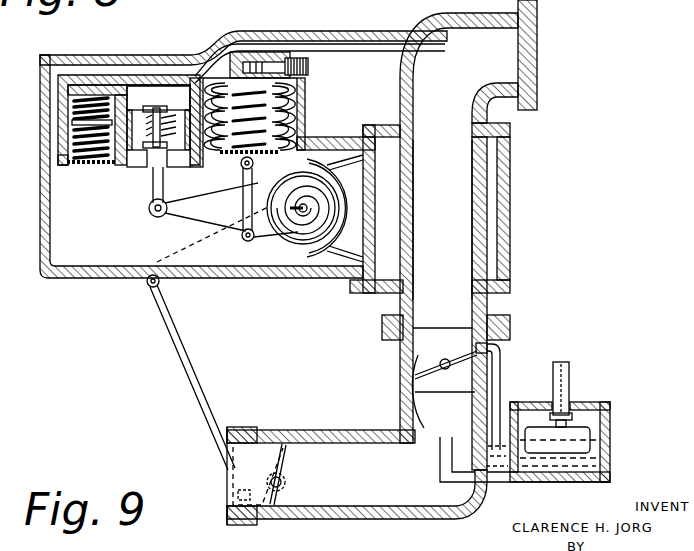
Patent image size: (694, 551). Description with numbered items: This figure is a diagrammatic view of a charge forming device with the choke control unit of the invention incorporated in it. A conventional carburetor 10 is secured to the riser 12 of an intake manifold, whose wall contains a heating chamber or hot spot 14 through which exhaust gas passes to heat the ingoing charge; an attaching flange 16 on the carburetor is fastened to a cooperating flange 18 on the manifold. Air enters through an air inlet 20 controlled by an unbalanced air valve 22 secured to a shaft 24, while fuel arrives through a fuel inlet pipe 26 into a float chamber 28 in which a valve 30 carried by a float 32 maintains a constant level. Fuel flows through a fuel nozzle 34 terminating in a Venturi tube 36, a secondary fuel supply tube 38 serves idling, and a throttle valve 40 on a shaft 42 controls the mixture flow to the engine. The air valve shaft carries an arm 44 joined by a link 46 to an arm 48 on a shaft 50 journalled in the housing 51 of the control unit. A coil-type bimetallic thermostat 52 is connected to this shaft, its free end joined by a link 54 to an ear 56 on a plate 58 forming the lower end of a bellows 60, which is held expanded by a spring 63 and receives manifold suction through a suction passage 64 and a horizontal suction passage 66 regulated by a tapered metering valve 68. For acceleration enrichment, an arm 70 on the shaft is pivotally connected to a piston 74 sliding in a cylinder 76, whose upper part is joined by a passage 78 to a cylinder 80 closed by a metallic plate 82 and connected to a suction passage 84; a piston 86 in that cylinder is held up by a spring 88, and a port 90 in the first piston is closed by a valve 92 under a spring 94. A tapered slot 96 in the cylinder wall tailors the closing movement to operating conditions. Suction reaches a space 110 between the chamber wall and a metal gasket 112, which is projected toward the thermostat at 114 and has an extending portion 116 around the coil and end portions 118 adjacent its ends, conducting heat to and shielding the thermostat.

The carburetor 10 is at (505, 202).
The riser 12 is at (482, 302).
The heating chamber 14 is at (493, 163).
The attaching flange 16 is at (503, 333).
The cooperating flange 18 is at (507, 317).
The air inlet 20 is at (365, 493).
The air valve 22 is at (287, 468).
The shaft 24 is at (287, 485).
The fuel inlet pipe 26 is at (562, 378).
The float chamber 28 is at (598, 418).
The valve 30 is at (568, 400).
The float 32 is at (585, 434).
The fuel nozzle 34 is at (440, 452).
The Venturi tube 36 is at (427, 423).
The secondary fuel supply tube 38 is at (495, 372).
The throttle valve 40 is at (427, 372).
The shaft 42 is at (447, 371).
The arm 44 is at (258, 480).
The link 46 is at (202, 398).
The arm 48 is at (162, 283).
The shaft 50 is at (305, 218).
The housing 51 is at (85, 277).
The bimetallic thermostat 52 is at (260, 243).
The link 54 is at (246, 224).
The ear 56 is at (242, 163).
The plate 58 is at (255, 164).
The bellows 60 is at (270, 128).
The spring 63 is at (270, 100).
The suction passage 64 is at (262, 62).
The horizontal suction passage 66 is at (280, 50).
The tapered metering valve 68 is at (309, 70).
The arm 70 is at (183, 207).
The piston 74 is at (178, 166).
The cylinder 76 is at (156, 88).
The passage 78 is at (127, 95).
The cylinder 80 is at (80, 85).
The metallic plate 82 is at (95, 170).
The suction passage 84 is at (47, 158).
The piston 86 is at (77, 112).
The spring 88 is at (78, 137).
The port 90 is at (163, 128).
The valve 92 is at (162, 110).
The spring 94 is at (150, 167).
The tapered slot 96 is at (197, 80).
The space 110 is at (380, 254).
The metal gasket 112 is at (363, 173).
The projected portion 114 is at (365, 207).
The extending portion 116 is at (305, 158).
The end portions 118 is at (310, 253).